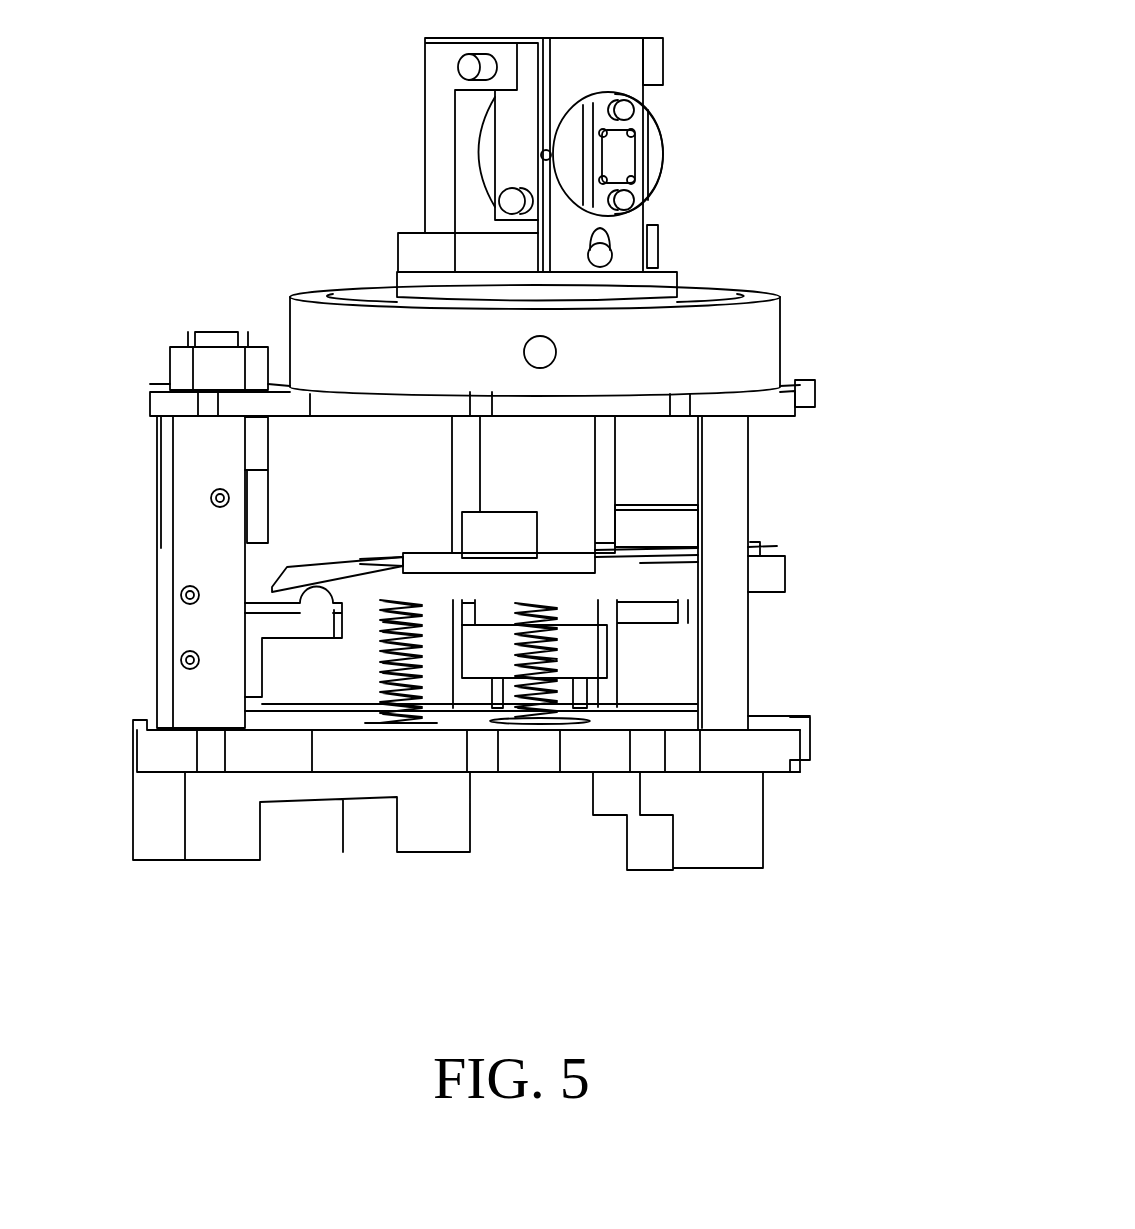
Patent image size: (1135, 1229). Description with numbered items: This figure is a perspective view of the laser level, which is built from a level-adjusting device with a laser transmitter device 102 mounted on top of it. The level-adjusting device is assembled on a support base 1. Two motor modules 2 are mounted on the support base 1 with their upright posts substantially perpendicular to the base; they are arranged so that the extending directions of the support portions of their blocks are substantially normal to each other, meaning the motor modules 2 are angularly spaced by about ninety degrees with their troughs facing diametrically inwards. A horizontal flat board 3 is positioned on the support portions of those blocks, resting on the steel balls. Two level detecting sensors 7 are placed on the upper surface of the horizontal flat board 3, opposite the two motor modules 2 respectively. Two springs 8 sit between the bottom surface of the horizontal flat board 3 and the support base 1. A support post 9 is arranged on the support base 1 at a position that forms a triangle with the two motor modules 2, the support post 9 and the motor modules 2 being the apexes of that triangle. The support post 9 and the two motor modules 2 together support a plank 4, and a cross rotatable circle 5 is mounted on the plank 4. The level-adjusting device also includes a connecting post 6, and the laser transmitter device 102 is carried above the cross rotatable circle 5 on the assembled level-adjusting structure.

The support base 1 is at (155, 812).
The motor modules 2 is at (205, 557).
The horizontal flat board 3 is at (310, 578).
The plank 4 is at (258, 405).
The cross rotatable circle 5 is at (703, 342).
The connecting post 6 is at (555, 465).
The level detecting sensors 7 is at (503, 532).
The springs 8 is at (407, 683).
The support post 9 is at (720, 647).
The laser transmitter device 102 is at (603, 65).